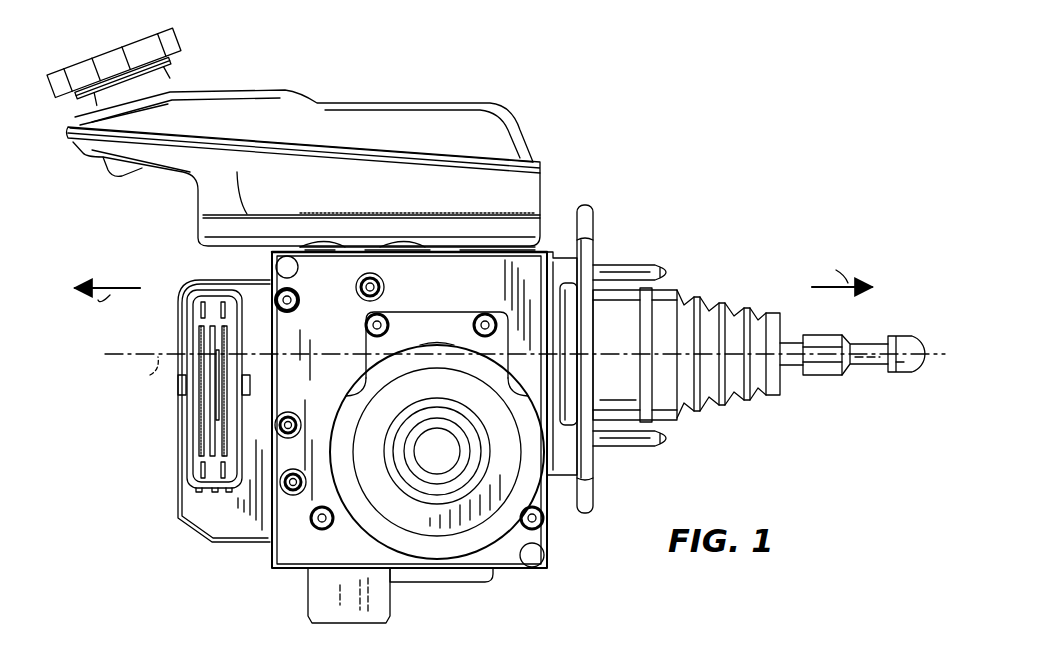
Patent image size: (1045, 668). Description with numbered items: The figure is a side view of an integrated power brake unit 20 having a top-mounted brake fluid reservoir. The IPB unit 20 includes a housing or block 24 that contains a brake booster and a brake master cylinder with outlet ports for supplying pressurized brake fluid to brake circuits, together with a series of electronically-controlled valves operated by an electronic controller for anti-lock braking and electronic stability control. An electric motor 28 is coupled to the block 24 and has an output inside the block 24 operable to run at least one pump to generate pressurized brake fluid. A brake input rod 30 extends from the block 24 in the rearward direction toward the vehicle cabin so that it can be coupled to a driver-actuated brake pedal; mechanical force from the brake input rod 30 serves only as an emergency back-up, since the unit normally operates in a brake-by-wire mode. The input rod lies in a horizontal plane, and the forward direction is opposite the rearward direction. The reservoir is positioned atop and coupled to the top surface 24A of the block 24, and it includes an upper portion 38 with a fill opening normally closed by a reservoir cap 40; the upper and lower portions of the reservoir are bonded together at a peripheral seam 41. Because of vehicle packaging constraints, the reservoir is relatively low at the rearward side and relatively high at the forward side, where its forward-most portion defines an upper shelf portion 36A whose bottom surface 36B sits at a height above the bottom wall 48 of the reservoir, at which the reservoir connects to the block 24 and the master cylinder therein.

The integrated power brake unit 20 is at (714, 128).
The housing or block 24 is at (480, 296).
The top surface of the block 24A is at (506, 245).
The electric motor 28 is at (397, 512).
The brake input rod 30 is at (822, 372).
The upper shelf portion 36A is at (210, 114).
The bottom surface of the upper shelf portion 36B is at (167, 179).
The upper portion of the reservoir 38 is at (318, 102).
The reservoir cap 40 is at (178, 50).
The peripheral seam 41 is at (425, 160).
The bottom wall of the reservoir 48 is at (348, 257).